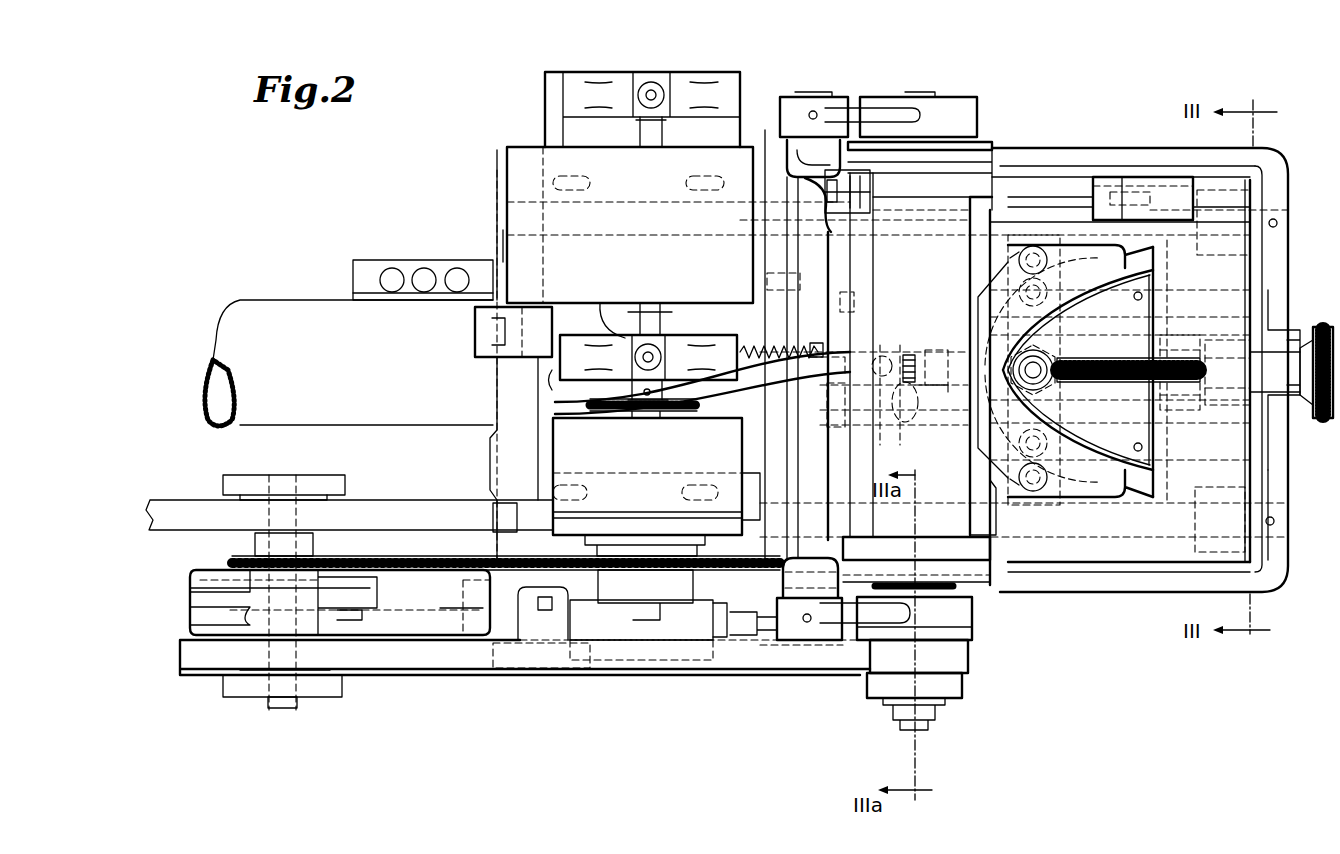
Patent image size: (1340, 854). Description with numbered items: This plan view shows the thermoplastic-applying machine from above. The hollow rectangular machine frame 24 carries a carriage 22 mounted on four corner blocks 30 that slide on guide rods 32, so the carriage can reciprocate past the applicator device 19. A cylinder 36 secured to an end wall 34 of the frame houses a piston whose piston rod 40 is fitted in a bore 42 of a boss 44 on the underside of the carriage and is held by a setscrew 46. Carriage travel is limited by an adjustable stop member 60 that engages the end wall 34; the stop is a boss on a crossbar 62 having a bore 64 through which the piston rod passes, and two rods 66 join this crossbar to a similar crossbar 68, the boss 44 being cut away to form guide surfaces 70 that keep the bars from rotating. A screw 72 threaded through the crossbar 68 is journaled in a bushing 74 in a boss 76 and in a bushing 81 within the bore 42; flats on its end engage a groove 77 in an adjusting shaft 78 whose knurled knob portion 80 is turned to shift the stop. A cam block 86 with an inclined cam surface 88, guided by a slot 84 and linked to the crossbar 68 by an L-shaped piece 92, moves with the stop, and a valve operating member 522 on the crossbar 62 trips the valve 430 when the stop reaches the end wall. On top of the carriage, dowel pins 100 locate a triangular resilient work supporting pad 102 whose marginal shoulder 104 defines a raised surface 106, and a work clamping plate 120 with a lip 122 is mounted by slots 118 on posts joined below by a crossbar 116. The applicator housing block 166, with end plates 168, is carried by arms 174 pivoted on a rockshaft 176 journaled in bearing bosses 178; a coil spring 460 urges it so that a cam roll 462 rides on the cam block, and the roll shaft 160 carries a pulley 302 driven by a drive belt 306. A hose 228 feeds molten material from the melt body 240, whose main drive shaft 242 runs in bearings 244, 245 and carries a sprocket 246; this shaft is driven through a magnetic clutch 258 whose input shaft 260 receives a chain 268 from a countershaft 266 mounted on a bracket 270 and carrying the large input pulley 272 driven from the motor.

The applicator device 19 is at (994, 522).
The carriage 22 is at (1250, 265).
The machine frame 24 is at (1200, 150).
The corner blocks 30 is at (1255, 196).
The guide rods 32 is at (1012, 210).
The end wall 34 is at (553, 390).
The cylinder 36 is at (269, 300).
The piston rod 40 is at (742, 340).
The bore 42 is at (885, 407).
The boss 44 is at (909, 407).
The setscrew 46 is at (882, 355).
The adjustable stop member 60 is at (815, 345).
The crossbar 62 is at (852, 298).
The bore 64 is at (826, 402).
The rods 66 is at (944, 348).
The crossbar 68 is at (1190, 291).
The guide surfaces 70 is at (915, 350).
The screw 72 is at (1155, 442).
The bushing 74 is at (1232, 352).
The boss 76 is at (1196, 356).
The groove 77 is at (1258, 395).
The adjusting shaft 78 is at (1256, 367).
The knurled knob portion 80 is at (1322, 421).
The bushing 81 is at (955, 348).
The slot 84 is at (1050, 198).
The cam block 86 is at (1135, 182).
The inclined cam surface 88 is at (1105, 190).
The L-shaped piece 92 is at (1153, 180).
The dowel pins 100 is at (1133, 297).
The resilient work supporting pad 102 is at (1153, 307).
The marginal shoulder 104 is at (1128, 268).
The raised surface 106 is at (1069, 370).
The crossbar 116 is at (970, 246).
The slots 118 is at (1018, 262).
The work clamping plate 120 is at (1085, 493).
The lip 122 is at (992, 342).
The shaft 160 is at (893, 730).
The applicator housing block 166 is at (944, 397).
The end plates 168 is at (988, 140).
The arms 174 is at (854, 115).
The rockshaft 176 is at (799, 345).
The bearing bosses 178 is at (790, 147).
The hose 228 is at (722, 406).
The melt body 240 is at (630, 225).
The main drive shaft 242 is at (672, 326).
The bearing 244 is at (610, 326).
The bearing 245 is at (687, 73).
The sprocket 246 is at (617, 413).
The magnetic clutch 258 is at (656, 487).
The input shaft 260 is at (652, 620).
The countershaft 266 is at (268, 702).
The chain 268 is at (428, 556).
The bracket 270 is at (194, 615).
The input pulley 272 is at (177, 500).
The pulley 302 is at (965, 688).
The drive belt 306 is at (790, 672).
The valve 430 is at (410, 262).
The coil spring 460 is at (775, 360).
The cam roll 462 is at (826, 194).
The valve operating member 522 is at (766, 278).